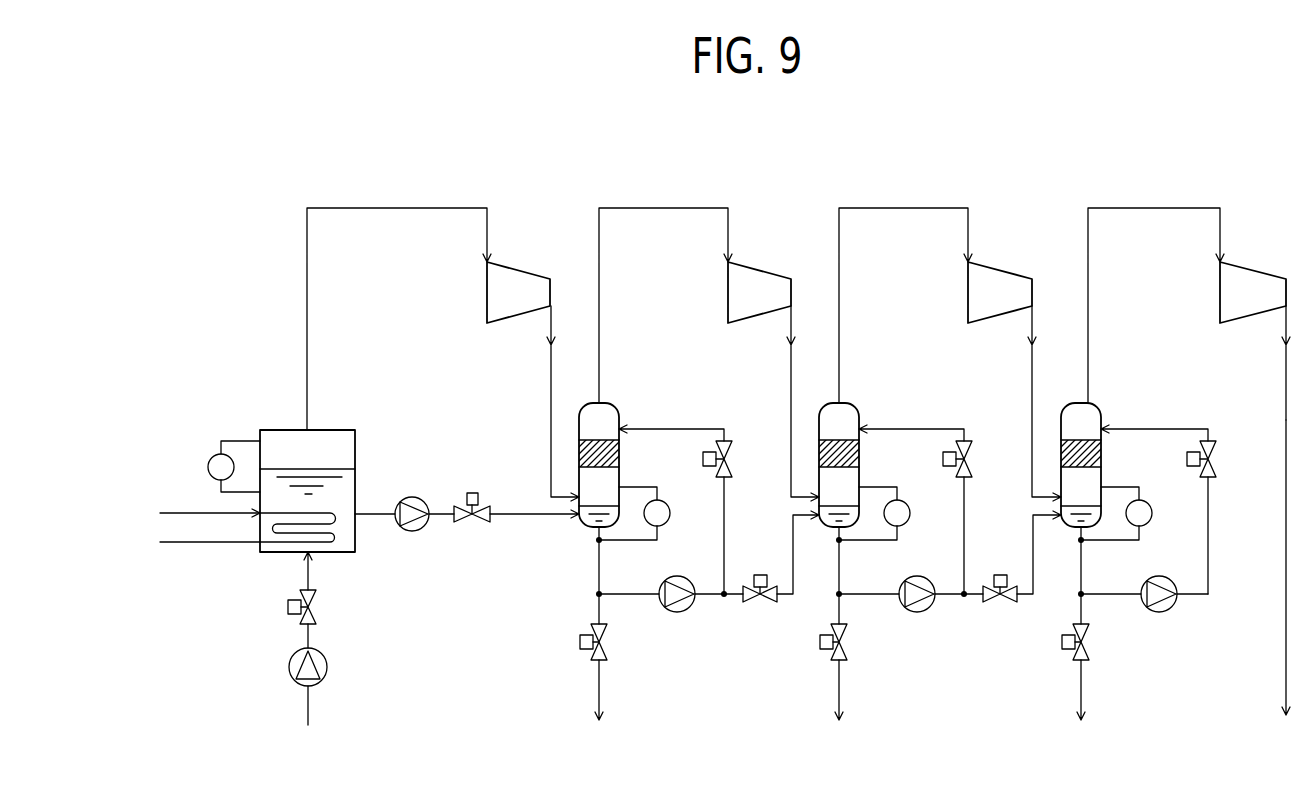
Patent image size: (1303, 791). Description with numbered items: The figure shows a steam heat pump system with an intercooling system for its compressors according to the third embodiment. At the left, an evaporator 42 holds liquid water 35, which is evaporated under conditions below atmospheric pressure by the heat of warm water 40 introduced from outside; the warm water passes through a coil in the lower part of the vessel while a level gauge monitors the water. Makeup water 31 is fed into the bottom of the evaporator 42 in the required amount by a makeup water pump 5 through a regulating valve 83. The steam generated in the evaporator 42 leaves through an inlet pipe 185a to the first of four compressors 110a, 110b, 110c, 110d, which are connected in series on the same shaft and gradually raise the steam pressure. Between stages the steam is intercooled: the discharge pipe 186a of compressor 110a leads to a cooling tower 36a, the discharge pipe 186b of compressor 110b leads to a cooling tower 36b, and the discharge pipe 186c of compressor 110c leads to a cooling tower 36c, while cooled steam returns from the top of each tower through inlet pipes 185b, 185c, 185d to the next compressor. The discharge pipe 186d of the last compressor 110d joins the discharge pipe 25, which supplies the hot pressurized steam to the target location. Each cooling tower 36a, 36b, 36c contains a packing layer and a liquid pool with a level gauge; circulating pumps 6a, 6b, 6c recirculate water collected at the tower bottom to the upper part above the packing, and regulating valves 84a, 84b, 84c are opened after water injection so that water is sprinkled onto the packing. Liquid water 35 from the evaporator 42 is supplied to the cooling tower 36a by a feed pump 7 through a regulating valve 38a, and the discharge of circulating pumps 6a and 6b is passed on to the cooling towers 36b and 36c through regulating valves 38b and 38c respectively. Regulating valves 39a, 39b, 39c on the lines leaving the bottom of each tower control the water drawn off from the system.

The makeup water pump 5 is at (290, 667).
The feed pump 7 is at (412, 532).
The circulating pump 6a is at (677, 612).
The circulating pump 6b is at (917, 612).
The circulating pump 6c is at (1159, 612).
The discharge pipe 25 is at (1286, 668).
The makeup water 31 is at (306, 707).
The liquid water 35 is at (345, 496).
The cooling tower 36a is at (622, 411).
The cooling tower 36b is at (862, 411).
The cooling tower 36c is at (1104, 411).
The regulating valve 38a is at (473, 492).
The regulating valve 38b is at (758, 604).
The regulating valve 38c is at (999, 604).
The regulating valve 39a is at (580, 642).
The regulating valve 39b is at (820, 642).
The regulating valve 39c is at (1062, 642).
The warm water 40 is at (187, 512).
The evaporator 42 is at (276, 430).
The regulating valve 83 is at (288, 607).
The regulating valve 84a is at (703, 459).
The regulating valve 84b is at (943, 459).
The regulating valve 84c is at (1187, 459).
The compressor 110a is at (529, 268).
The compressor 110b is at (769, 268).
The compressor 110c is at (1009, 268).
The compressor 110d is at (1262, 268).
The inlet pipe 185a is at (398, 207).
The inlet pipe 185b is at (663, 207).
The inlet pipe 185c is at (906, 207).
The inlet pipe 185d is at (1154, 207).
The discharge pipe 186a is at (550, 362).
The discharge pipe 186b is at (791, 360).
The discharge pipe 186c is at (1032, 360).
The discharge pipe 186d is at (1286, 362).